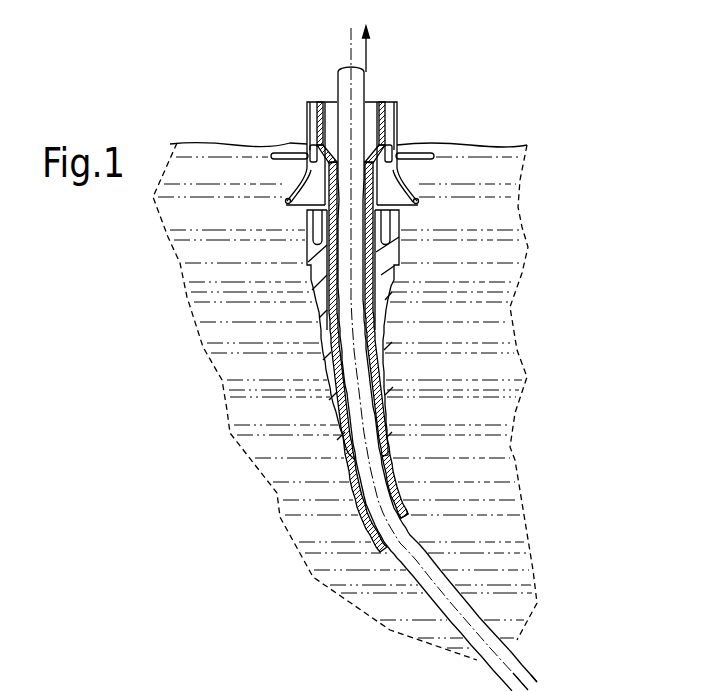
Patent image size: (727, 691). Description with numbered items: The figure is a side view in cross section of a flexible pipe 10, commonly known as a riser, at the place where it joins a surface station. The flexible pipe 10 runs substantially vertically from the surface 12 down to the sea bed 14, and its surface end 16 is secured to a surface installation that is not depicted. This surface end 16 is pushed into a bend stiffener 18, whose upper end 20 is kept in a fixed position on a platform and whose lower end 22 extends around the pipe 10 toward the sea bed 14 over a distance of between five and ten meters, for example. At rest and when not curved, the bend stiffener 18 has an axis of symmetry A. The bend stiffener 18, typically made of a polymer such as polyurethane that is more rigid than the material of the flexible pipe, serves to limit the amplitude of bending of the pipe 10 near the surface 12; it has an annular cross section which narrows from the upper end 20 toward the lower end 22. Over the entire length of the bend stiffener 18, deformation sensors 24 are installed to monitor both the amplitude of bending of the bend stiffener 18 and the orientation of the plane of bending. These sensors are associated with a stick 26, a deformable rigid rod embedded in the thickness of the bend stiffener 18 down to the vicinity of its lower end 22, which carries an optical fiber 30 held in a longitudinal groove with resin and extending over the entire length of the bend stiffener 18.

The flexible pipe 10 is at (520, 666).
The surface 12 is at (228, 143).
The sea bed 14 is at (256, 404).
The surface end 16 is at (337, 85).
The bend stiffener 18 is at (392, 272).
The upper end 20 is at (302, 212).
The lower end 22 is at (353, 492).
The deformation sensors 24 is at (407, 504).
The stick 26 is at (393, 462).
The optical fiber 30 is at (370, 52).
The axis of symmetry A is at (351, 32).